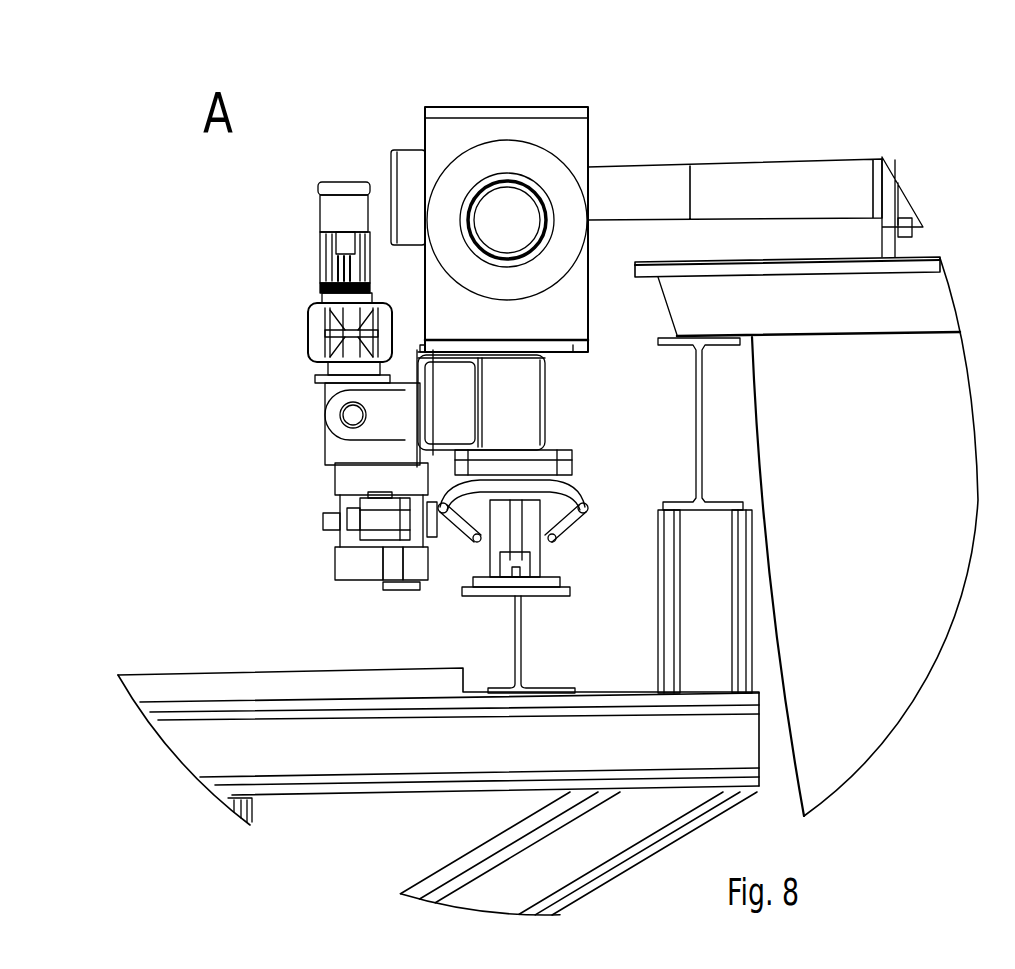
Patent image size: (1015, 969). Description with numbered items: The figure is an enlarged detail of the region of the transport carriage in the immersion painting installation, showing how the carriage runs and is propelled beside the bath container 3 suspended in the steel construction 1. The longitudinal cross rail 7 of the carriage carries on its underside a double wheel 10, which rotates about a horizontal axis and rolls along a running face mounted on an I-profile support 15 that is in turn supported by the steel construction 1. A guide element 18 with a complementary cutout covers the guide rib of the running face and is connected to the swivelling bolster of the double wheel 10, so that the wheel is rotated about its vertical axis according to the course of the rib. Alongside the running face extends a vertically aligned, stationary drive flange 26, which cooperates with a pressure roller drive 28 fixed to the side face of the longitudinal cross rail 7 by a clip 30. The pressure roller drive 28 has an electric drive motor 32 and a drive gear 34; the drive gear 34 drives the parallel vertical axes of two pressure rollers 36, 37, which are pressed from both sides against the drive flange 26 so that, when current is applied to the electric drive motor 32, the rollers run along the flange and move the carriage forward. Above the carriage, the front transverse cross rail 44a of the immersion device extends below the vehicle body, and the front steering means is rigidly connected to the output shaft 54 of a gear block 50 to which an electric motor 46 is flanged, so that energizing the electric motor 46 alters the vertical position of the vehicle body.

The steel construction 1 is at (240, 732).
The bath container 3 is at (852, 550).
The longitudinal cross rail 7 is at (510, 407).
The double wheel 10 is at (530, 525).
The I-profile support 15 is at (523, 640).
The guide element 18 is at (543, 570).
The drive flange 26 is at (380, 558).
The pressure roller drive 28 is at (298, 345).
The clip 30 is at (383, 433).
The electric drive motor 32 is at (328, 213).
The drive gear 34 is at (387, 435).
The pressure roller 36 is at (347, 557).
The pressure roller 37 is at (413, 563).
The front transverse cross rail 44a is at (903, 210).
The electric motor 46 is at (503, 208).
The gear block 50 is at (448, 137).
The output shaft 54 is at (650, 197).